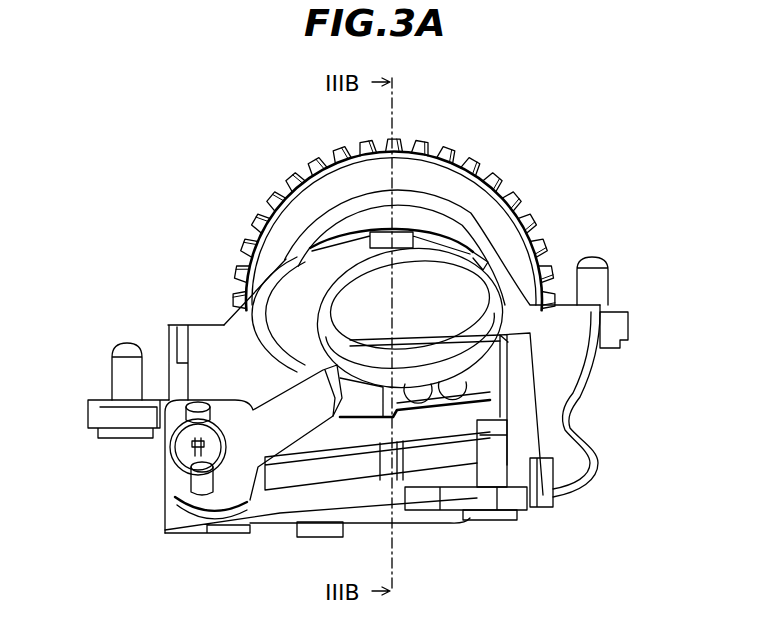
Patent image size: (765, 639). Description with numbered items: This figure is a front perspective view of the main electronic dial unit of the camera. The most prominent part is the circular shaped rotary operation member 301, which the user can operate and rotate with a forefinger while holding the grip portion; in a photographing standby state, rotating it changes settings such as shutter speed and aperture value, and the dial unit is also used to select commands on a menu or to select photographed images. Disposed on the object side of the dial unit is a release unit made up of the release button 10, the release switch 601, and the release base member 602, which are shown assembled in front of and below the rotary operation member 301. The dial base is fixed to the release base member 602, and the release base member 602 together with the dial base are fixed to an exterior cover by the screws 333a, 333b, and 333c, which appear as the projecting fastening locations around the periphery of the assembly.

The release button 10 is at (370, 282).
The rotary operation member 301 is at (470, 197).
The screw 333a is at (480, 520).
The screw 333b is at (592, 290).
The screw 333c is at (125, 440).
The release switch 601 is at (312, 408).
The release base member 602 is at (562, 377).